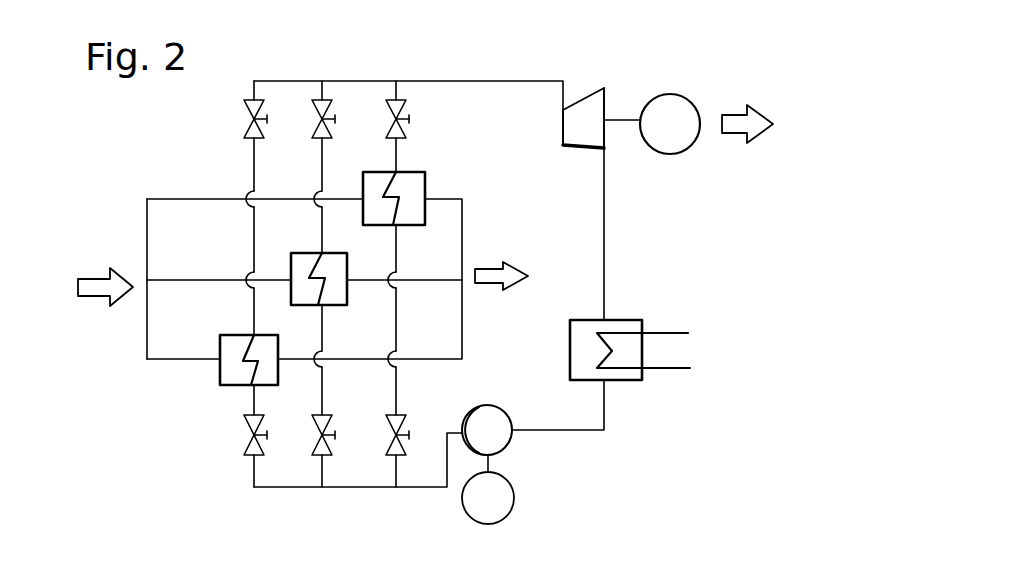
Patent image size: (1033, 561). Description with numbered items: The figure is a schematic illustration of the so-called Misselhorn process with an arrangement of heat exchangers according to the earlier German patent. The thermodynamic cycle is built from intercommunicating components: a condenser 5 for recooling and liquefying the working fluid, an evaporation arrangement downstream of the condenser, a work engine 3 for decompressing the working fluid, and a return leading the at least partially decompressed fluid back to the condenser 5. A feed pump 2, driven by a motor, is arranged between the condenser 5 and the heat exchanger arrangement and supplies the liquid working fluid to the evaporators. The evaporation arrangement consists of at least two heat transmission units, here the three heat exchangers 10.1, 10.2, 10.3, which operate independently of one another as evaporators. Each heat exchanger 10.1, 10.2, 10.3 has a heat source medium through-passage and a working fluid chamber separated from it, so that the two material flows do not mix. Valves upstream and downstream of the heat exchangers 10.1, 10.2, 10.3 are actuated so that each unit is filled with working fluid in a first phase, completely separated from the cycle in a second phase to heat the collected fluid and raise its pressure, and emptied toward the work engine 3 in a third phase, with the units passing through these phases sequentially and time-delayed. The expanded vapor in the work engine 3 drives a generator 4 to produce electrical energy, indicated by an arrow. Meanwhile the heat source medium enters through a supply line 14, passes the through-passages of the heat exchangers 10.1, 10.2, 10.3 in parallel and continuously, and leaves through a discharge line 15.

The feed pump 2 is at (508, 463).
The work engine 3 is at (598, 73).
The generator 4 is at (690, 97).
The condenser 5 is at (641, 384).
The heat exchanger 10.1 is at (360, 193).
The heat exchanger 10.2 is at (287, 274).
The heat exchanger 10.3 is at (218, 351).
The supply line 14 is at (100, 277).
The discharge line 15 is at (506, 265).